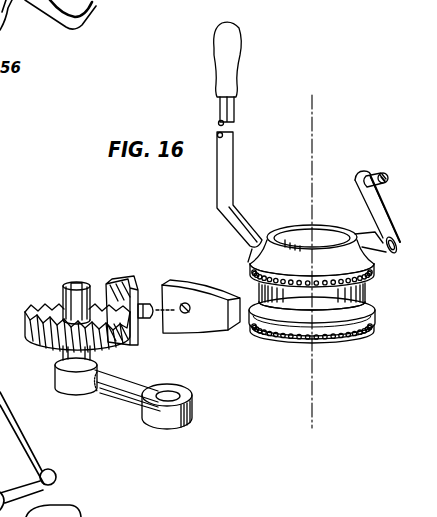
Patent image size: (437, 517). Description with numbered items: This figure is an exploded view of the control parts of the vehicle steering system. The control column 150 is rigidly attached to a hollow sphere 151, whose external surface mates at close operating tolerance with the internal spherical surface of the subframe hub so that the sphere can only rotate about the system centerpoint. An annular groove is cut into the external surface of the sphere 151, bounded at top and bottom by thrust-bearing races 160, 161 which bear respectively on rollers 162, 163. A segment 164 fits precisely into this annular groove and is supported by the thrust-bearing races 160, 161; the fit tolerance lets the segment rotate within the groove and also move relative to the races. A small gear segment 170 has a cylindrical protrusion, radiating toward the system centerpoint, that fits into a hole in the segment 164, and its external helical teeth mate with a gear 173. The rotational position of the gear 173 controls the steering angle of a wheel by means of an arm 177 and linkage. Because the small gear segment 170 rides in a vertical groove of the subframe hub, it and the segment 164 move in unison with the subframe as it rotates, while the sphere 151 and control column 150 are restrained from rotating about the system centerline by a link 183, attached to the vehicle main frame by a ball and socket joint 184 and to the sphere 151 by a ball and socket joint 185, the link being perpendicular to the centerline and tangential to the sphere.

The control column 150 is at (235, 147).
The hollow sphere 151 is at (276, 232).
The thrust-bearing race 160 is at (372, 281).
The thrust-bearing race 161 is at (365, 307).
The rollers 162 is at (370, 267).
The rollers 163 is at (362, 324).
The segment 164 is at (210, 318).
The small gear segment 170 is at (118, 276).
The gear 173 is at (49, 302).
The arm 177 is at (127, 400).
The link 183 is at (380, 212).
The ball and socket joint 184 is at (375, 172).
The ball and socket joint 185 is at (373, 233).